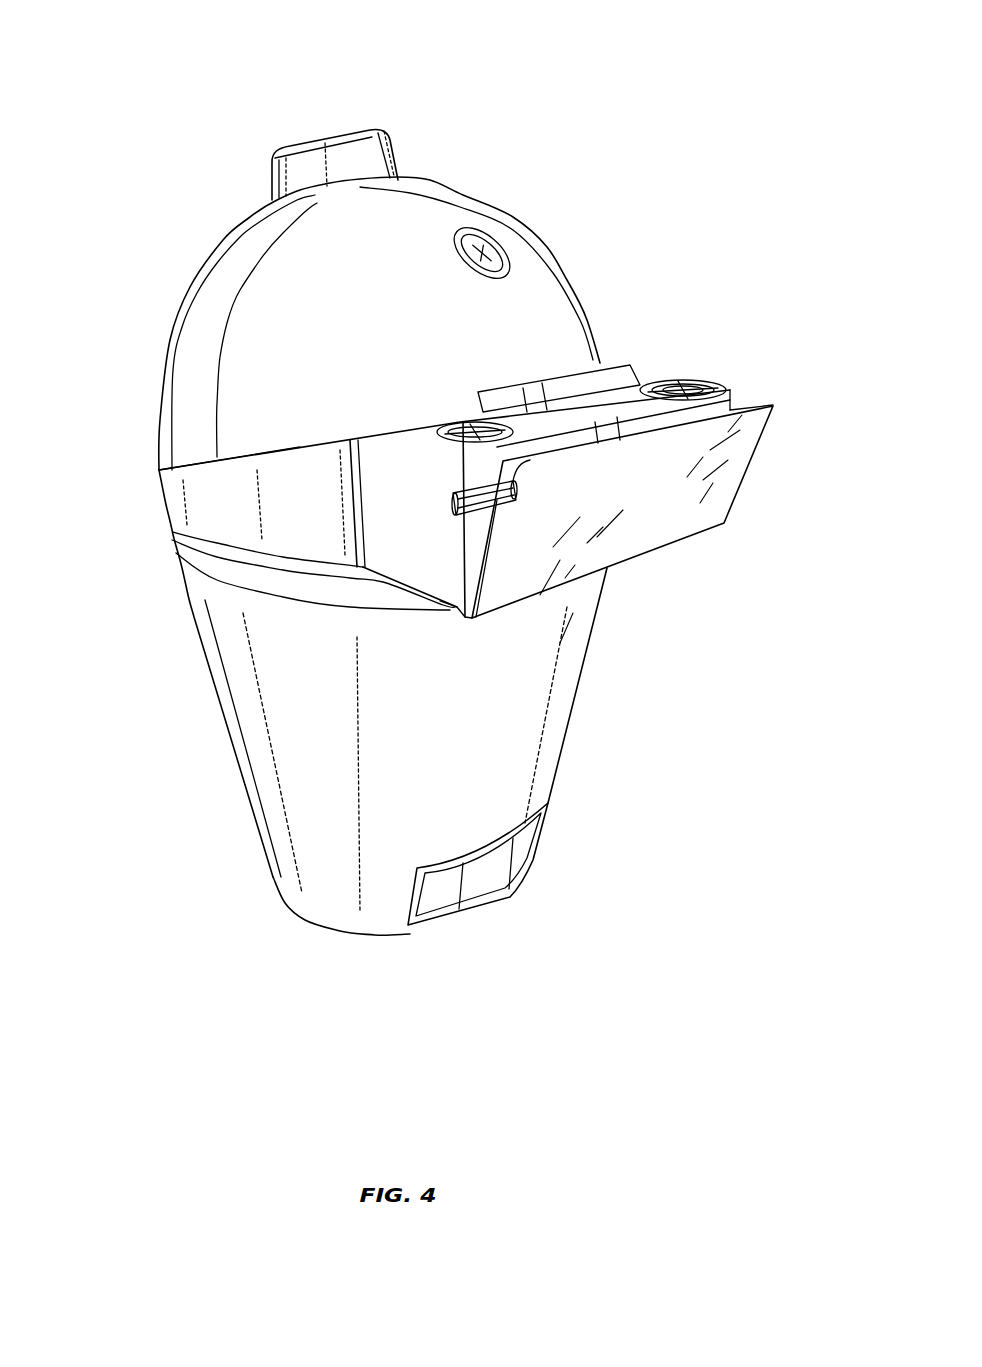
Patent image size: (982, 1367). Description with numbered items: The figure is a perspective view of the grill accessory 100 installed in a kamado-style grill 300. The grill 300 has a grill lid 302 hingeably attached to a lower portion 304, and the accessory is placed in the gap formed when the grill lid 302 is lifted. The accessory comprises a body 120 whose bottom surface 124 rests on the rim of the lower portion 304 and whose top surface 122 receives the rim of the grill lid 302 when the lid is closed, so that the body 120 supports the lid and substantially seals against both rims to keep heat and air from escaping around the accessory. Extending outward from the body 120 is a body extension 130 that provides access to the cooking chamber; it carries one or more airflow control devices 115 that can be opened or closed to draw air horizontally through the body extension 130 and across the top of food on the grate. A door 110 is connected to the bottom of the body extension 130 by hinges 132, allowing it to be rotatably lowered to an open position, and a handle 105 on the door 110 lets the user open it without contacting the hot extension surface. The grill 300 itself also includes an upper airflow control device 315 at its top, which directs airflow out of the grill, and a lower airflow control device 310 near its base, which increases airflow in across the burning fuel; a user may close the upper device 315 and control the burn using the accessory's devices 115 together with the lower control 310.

The kamado-style grill 300 is at (133, 197).
The grill lid 302 is at (198, 270).
The upper airflow control device 315 is at (347, 128).
The lower portion 304 is at (247, 783).
The lower airflow control device 310 is at (537, 858).
The bottom surface 124 is at (232, 533).
The grill accessory 100 is at (788, 507).
The body 120 is at (167, 500).
The top surface 122 is at (176, 444).
The hinges 132 is at (467, 618).
The body extension 130 is at (730, 392).
The airflow control devices 115 is at (677, 380).
The handle 105 is at (452, 503).
The door 110 is at (670, 542).